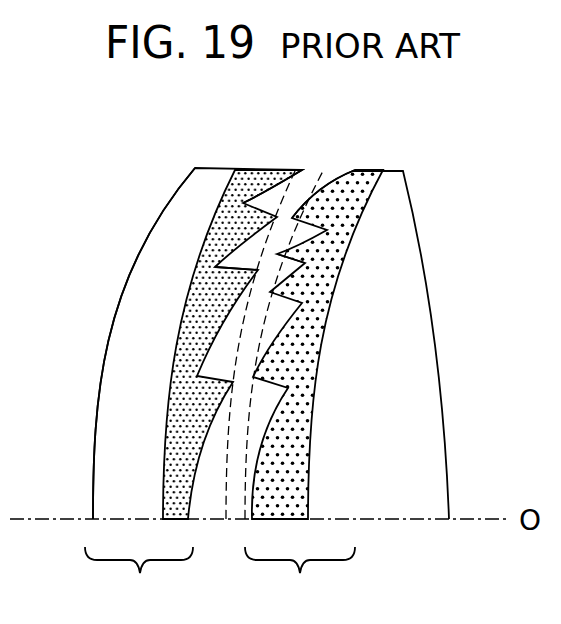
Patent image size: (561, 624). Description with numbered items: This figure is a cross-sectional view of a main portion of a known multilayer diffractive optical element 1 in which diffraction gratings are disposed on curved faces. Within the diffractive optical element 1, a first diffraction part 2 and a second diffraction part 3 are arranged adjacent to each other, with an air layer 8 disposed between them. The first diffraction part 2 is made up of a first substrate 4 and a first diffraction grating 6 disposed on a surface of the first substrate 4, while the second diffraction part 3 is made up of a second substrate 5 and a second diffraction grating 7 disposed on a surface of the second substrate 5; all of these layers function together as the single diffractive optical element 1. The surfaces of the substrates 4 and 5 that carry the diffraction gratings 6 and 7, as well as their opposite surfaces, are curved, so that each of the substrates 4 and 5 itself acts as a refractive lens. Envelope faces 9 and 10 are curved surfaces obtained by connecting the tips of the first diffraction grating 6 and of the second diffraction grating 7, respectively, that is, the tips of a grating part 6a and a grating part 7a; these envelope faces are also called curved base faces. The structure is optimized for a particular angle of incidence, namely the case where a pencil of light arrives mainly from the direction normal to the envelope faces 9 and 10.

The diffractive optical element 1 is at (462, 184).
The first diffraction part 2 is at (139, 575).
The second diffraction part 3 is at (300, 575).
The first substrate 4 is at (132, 362).
The second substrate 5 is at (403, 500).
The first diffraction grating 6 is at (185, 423).
The grating part 6a is at (247, 178).
The second diffraction grating 7 is at (298, 442).
The grating part 7a is at (338, 184).
The air layer 8 is at (213, 485).
The envelope face 9 is at (227, 267).
The envelope face 10 is at (290, 257).